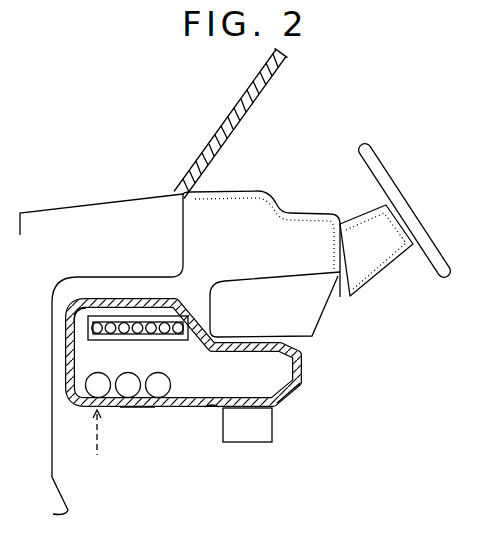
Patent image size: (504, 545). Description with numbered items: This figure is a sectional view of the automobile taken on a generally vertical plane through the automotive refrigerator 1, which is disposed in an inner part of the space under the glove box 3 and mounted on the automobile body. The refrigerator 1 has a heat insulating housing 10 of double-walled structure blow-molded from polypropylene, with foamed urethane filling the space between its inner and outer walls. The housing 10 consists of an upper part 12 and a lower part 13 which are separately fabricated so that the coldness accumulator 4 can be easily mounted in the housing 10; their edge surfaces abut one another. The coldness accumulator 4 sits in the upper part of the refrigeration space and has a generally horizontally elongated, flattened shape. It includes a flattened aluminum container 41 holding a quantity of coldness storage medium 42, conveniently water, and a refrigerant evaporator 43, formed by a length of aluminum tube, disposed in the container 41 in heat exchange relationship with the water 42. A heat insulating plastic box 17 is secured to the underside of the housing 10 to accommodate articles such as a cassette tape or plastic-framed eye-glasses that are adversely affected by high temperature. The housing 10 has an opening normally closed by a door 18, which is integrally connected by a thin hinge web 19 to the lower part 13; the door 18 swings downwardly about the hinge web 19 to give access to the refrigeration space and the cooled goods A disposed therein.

The automotive refrigerator 1 is at (104, 465).
The glove box 3 is at (322, 322).
The coldness accumulator 4 is at (101, 291).
The heat insulating housing 10 is at (137, 408).
The upper part of housing 12 is at (81, 290).
The lower part of housing 13 is at (67, 400).
The box 17 is at (253, 442).
The door 18 is at (288, 397).
The hinge web 19 is at (217, 405).
The container 41 is at (67, 315).
The coldness storage medium 42 is at (153, 316).
The refrigerant evaporator 43 is at (115, 316).
The cooled goods A is at (86, 380).